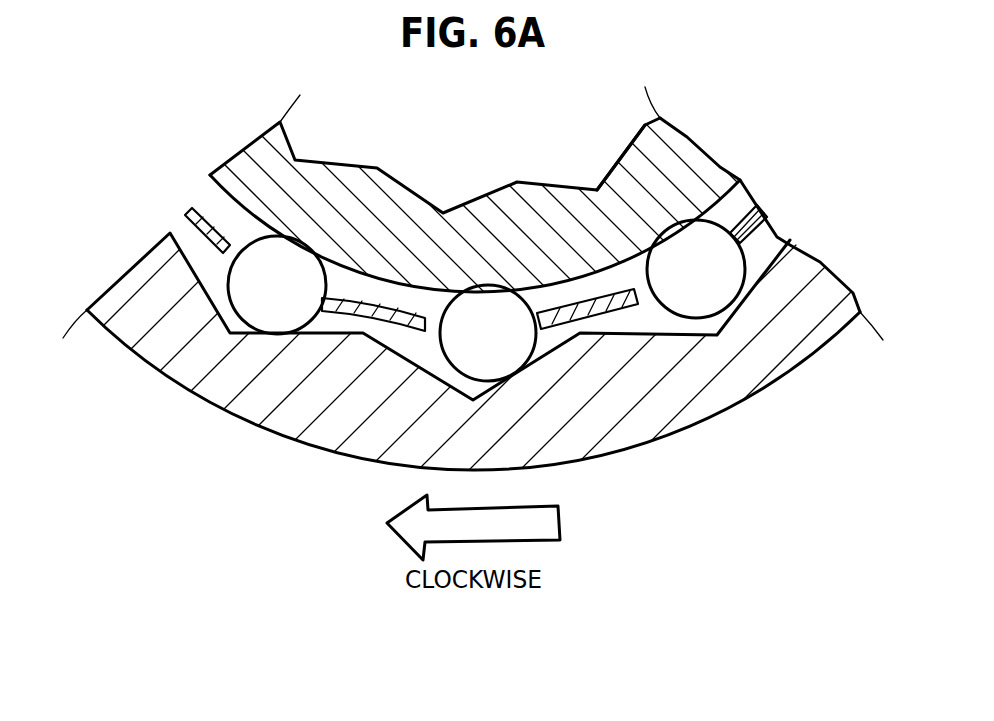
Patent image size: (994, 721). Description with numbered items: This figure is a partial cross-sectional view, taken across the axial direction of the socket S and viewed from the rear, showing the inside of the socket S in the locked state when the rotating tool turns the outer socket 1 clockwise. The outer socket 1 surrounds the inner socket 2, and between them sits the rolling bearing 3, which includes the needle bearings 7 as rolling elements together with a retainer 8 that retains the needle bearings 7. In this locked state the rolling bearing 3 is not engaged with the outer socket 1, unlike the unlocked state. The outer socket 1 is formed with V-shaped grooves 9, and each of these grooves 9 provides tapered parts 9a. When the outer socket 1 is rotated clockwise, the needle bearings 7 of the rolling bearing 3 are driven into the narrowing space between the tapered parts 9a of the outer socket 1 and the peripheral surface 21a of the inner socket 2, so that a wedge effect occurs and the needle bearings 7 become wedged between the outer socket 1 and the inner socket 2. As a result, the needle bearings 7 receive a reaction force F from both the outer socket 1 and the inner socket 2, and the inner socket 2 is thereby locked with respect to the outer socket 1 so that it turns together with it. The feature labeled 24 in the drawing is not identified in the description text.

The outer socket 1 is at (803, 362).
The inner socket 2 is at (673, 165).
The rolling bearing 3 is at (741, 217).
The needle bearings 7 is at (695, 272).
The retainer 8 is at (458, 312).
The V-shaped grooves 9 is at (348, 297).
The tapered parts 9a is at (556, 306).
The peripheral surface 21a is at (365, 252).
The cam surface 24 is at (624, 156).
The socket S is at (727, 432).
The reaction force F is at (494, 301).